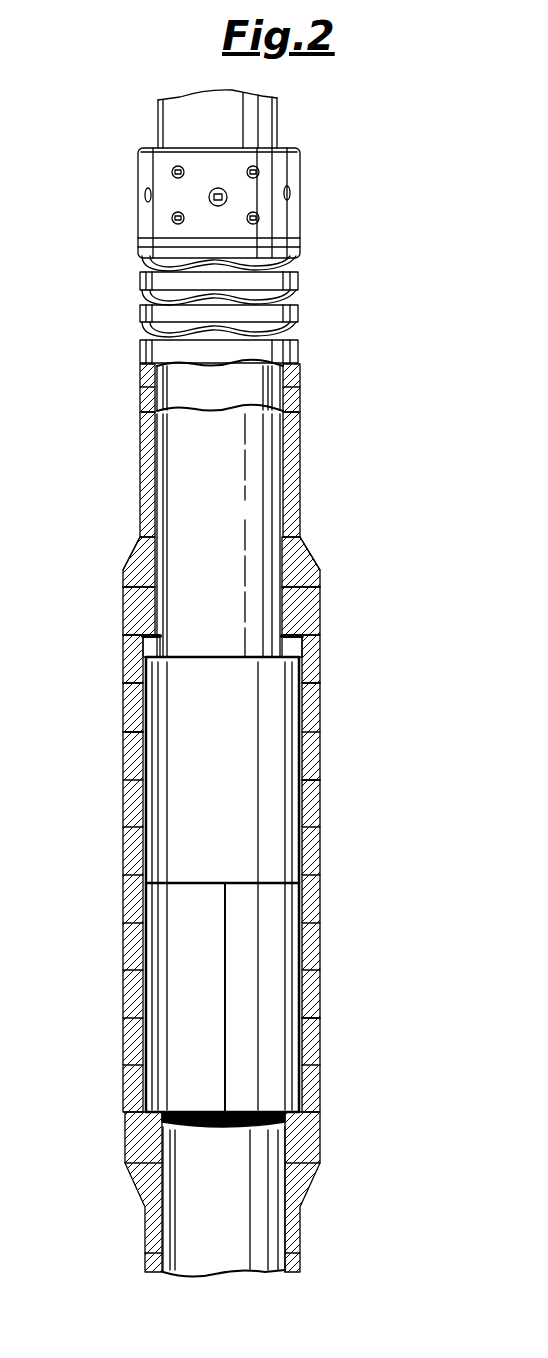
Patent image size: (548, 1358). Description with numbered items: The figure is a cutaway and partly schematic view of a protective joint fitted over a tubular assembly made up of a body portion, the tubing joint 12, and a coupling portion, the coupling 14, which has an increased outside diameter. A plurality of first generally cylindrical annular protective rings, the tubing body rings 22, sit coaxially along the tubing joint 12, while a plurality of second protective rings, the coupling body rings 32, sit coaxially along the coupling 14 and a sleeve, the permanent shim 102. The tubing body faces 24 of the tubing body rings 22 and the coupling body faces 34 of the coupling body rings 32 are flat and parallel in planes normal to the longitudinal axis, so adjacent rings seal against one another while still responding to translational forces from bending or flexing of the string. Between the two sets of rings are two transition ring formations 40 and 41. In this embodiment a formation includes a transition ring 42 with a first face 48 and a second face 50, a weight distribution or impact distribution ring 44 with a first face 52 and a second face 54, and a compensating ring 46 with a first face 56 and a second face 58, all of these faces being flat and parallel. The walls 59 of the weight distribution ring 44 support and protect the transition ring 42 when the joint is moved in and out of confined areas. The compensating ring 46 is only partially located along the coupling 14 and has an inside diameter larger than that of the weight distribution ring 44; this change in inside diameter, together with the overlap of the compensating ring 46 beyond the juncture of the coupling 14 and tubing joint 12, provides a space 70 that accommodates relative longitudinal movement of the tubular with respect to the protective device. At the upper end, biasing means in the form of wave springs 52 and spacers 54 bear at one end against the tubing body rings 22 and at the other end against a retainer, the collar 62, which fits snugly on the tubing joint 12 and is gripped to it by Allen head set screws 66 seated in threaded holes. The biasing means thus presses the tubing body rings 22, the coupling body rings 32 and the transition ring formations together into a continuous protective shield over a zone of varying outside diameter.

The tubing joint 12 is at (262, 472).
The coupling 14 is at (283, 868).
The tubing body rings 22 is at (300, 402).
The tubing body faces 24 is at (300, 448).
The coupling body rings 32 is at (321, 800).
The coupling body faces 34 is at (321, 743).
The transition ring formation 40 is at (128, 553).
The transition ring formation 41 is at (128, 1183).
The transition ring 42 is at (320, 562).
The weight distribution or impact distribution ring 44 is at (322, 614).
The compensating ring 46 is at (321, 670).
The first face 48 is at (302, 535).
The second face 50 is at (322, 587).
The wave springs 52 is at (296, 268).
The spacers 54 is at (298, 283).
The first face 56 is at (123, 660).
The second face 58 is at (123, 683).
The walls 59 is at (123, 625).
The collar 62 is at (300, 222).
The Allen head set screws 66 is at (298, 192).
The space 70 is at (322, 645).
The permanent shim 102 is at (321, 1035).